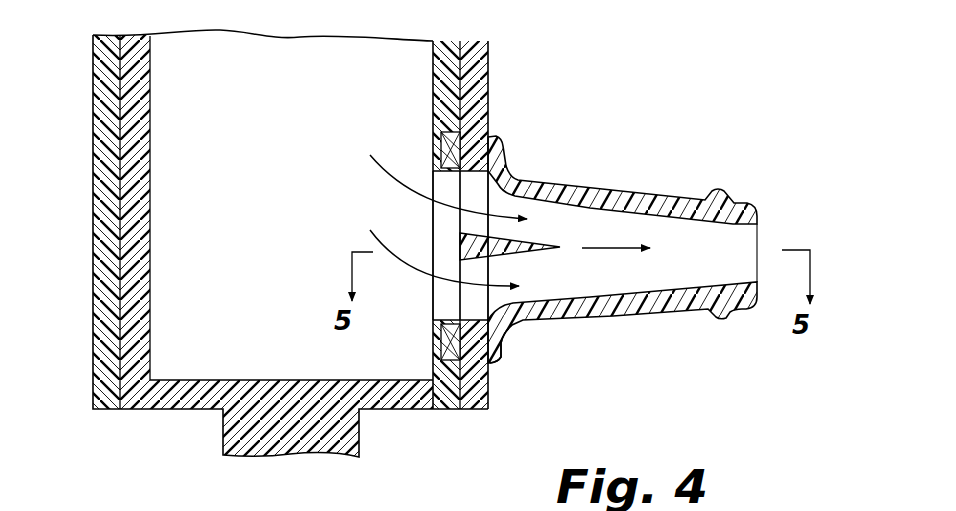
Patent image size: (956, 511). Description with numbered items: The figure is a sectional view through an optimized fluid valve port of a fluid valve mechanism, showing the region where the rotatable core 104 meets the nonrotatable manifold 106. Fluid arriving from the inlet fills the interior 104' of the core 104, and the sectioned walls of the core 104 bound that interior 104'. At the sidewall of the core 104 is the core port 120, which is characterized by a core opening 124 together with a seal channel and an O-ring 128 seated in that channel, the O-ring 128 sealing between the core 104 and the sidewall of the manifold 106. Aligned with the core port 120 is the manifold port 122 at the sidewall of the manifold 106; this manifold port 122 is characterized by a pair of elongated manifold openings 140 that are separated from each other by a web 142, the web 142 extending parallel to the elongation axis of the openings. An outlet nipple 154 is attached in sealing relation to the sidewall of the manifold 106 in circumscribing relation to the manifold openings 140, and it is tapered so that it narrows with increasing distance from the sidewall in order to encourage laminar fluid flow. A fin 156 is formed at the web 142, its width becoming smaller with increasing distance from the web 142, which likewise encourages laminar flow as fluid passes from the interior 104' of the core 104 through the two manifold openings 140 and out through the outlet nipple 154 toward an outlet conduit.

The core 104 is at (290, 266).
The interior of the core 104' is at (235, 118).
The manifold 106 is at (496, 83).
The core port 120 is at (429, 301).
The manifold port 122 is at (513, 328).
The core opening 124 is at (450, 193).
The O-ring 128 is at (462, 366).
The manifold openings 140 is at (481, 203).
The web 142 is at (458, 238).
The outlet nipple 154 is at (660, 192).
The fin 156 is at (609, 189).